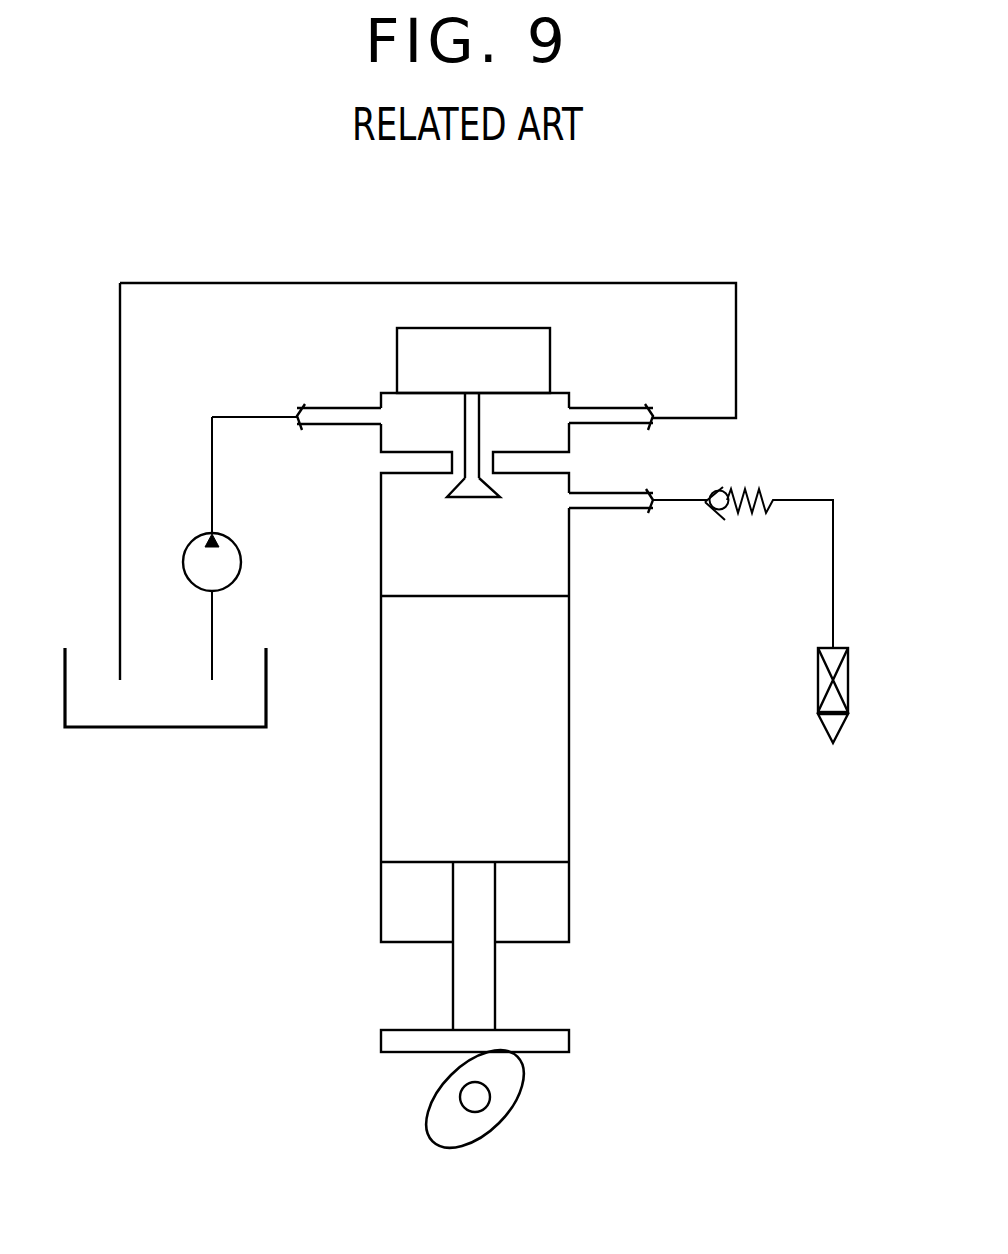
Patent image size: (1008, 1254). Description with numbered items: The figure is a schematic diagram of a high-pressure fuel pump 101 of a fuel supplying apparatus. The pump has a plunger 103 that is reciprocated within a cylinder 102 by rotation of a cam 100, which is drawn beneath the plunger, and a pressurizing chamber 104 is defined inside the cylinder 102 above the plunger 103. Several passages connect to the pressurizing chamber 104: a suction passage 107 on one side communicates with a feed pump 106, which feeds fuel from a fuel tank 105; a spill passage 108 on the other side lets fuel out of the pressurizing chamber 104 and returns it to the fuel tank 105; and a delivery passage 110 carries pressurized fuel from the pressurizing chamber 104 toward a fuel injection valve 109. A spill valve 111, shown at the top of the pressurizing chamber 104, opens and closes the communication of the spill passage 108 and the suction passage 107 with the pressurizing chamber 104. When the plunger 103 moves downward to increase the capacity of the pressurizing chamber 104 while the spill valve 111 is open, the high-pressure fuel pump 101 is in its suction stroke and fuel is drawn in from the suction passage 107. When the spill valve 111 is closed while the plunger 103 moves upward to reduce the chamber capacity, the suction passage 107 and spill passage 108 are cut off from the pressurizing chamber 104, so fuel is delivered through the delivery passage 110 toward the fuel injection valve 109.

The cam 100 is at (522, 1087).
The high-pressure fuel pump 101 is at (608, 694).
The cylinder 102 is at (569, 576).
The plunger 103 is at (400, 595).
The pressurizing chamber 104 is at (475, 534).
The fuel tank 105 is at (266, 680).
The feed pump 106 is at (236, 538).
The suction passage 107 is at (331, 410).
The spill passage 108 is at (598, 412).
The fuel injection valve 109 is at (884, 677).
The delivery passage 110 is at (598, 497).
The spill valve 111 is at (448, 496).